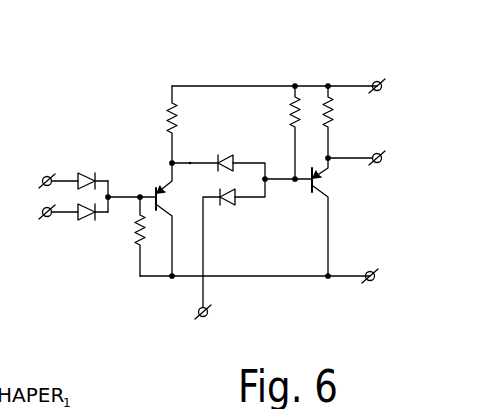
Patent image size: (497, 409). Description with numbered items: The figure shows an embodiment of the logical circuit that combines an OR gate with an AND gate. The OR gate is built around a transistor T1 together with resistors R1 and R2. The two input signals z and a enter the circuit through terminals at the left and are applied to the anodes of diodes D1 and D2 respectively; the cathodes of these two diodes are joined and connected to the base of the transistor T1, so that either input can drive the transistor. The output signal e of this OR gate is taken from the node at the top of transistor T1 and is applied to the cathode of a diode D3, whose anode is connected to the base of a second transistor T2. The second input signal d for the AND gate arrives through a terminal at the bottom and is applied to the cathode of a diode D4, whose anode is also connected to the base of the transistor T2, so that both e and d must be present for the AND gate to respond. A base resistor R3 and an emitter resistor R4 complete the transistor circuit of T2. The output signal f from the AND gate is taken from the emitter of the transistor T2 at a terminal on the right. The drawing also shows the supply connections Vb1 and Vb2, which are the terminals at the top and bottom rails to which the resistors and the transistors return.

The input signal z is at (42, 180).
The input signal a is at (42, 212).
The diode D1 is at (81, 172).
The diode D2 is at (87, 221).
The diode D3 is at (222, 155).
The diode D4 is at (228, 206).
The resistor R1 is at (135, 226).
The resistor R2 is at (168, 113).
The base resistor R3 is at (291, 118).
The emitter resistor R4 is at (333, 118).
The transistor T1 is at (176, 219).
The transistor T2 is at (320, 184).
The output signal e is at (190, 162).
The output signal f is at (382, 157).
The second input signal d is at (207, 316).
The bias voltage terminal Vb1 is at (382, 86).
The bias voltage terminal Vb2 is at (375, 277).